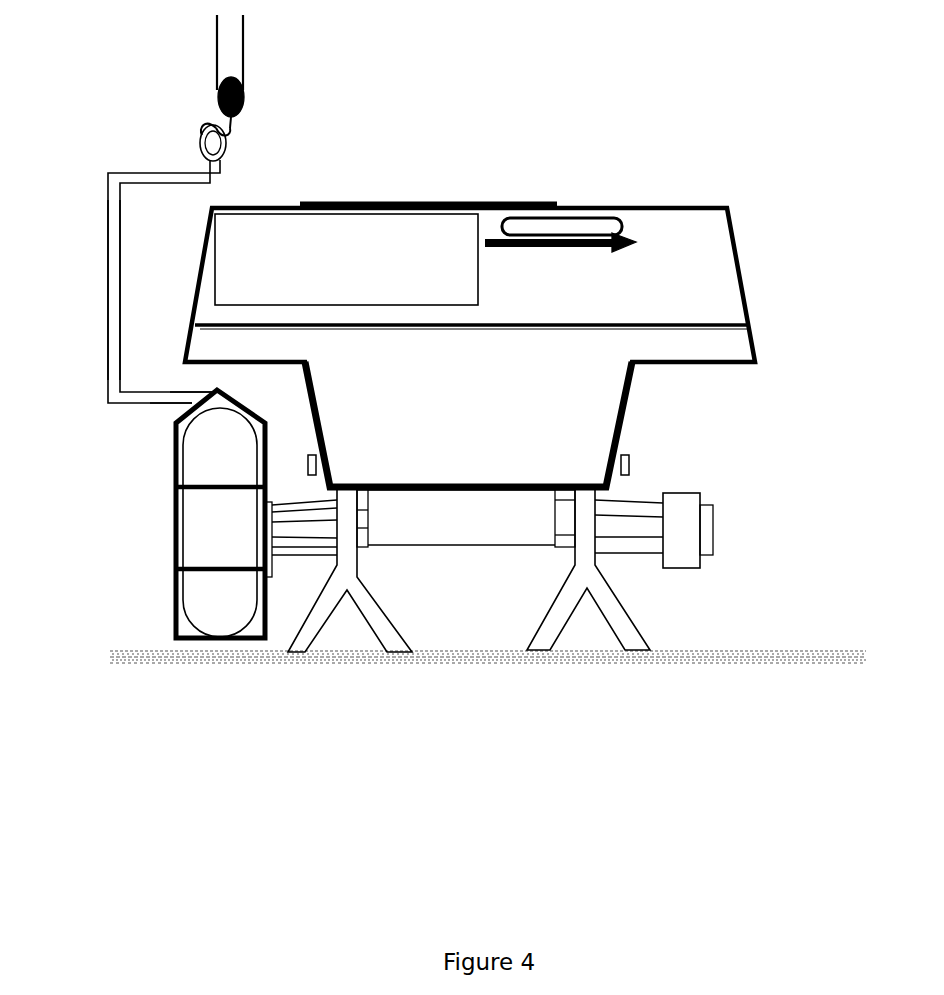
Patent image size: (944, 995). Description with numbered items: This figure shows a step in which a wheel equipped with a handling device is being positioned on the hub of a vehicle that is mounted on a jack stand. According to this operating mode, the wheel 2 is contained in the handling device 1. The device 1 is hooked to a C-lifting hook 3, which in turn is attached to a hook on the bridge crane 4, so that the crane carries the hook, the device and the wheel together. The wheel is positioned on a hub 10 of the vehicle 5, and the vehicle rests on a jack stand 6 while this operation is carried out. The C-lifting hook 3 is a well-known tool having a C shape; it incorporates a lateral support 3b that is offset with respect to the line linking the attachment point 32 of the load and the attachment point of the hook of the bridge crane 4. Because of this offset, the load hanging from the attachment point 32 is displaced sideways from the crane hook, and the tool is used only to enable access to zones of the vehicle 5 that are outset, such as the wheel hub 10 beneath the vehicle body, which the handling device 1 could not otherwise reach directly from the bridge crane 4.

The handling device 1 is at (168, 468).
The wheel 2 is at (220, 533).
The C-lifting hook 3 is at (147, 180).
The lateral support 3b is at (108, 285).
The attachment point of the load 32 is at (208, 385).
The bridge crane 4 is at (245, 90).
The vehicle 5 is at (695, 240).
The jack stand 6 is at (312, 650).
The hub 10 is at (713, 527).